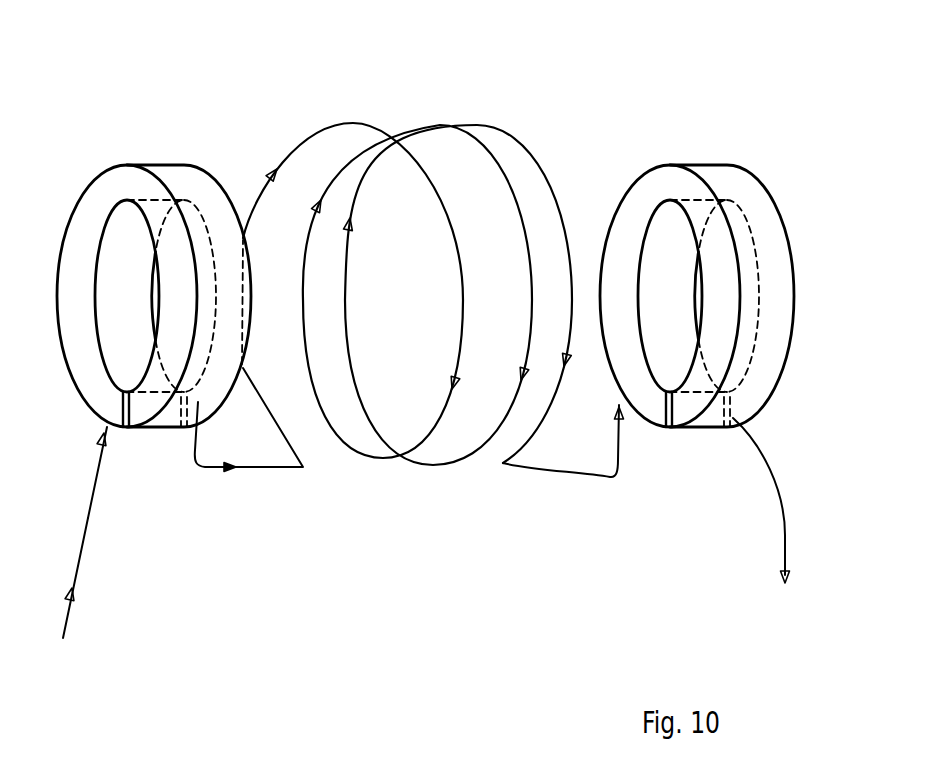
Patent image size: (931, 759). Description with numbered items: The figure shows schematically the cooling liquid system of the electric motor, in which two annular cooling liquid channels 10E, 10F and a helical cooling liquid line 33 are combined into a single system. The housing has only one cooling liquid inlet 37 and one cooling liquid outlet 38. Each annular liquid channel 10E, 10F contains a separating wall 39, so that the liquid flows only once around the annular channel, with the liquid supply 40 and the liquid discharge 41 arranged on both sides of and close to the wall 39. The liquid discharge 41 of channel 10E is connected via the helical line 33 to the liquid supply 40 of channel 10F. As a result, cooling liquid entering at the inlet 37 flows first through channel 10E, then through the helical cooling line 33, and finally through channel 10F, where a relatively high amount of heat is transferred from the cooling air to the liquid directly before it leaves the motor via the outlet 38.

The annular liquid channel 10E is at (123, 180).
The annular liquid channel 10F is at (750, 203).
The helical cooling liquid line 33 is at (463, 125).
The cooling liquid inlet 37 is at (73, 592).
The cooling liquid outlet 38 is at (787, 578).
The separating wall 39 is at (668, 498).
The liquid supply 40 is at (615, 450).
The liquid discharge 41 is at (810, 507).